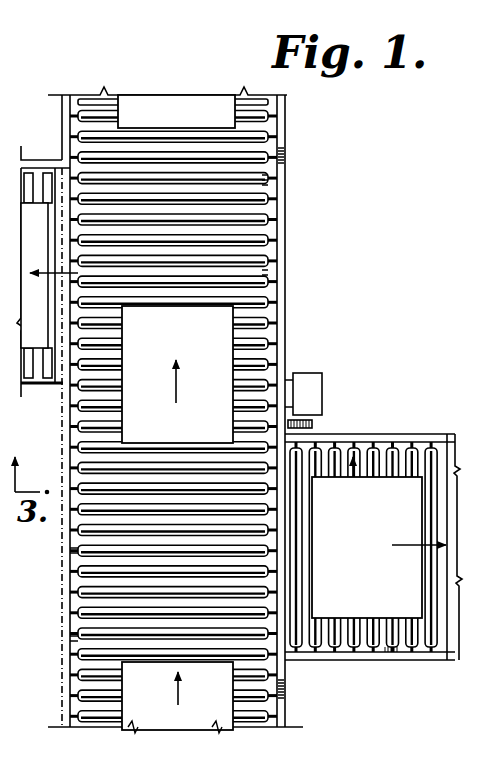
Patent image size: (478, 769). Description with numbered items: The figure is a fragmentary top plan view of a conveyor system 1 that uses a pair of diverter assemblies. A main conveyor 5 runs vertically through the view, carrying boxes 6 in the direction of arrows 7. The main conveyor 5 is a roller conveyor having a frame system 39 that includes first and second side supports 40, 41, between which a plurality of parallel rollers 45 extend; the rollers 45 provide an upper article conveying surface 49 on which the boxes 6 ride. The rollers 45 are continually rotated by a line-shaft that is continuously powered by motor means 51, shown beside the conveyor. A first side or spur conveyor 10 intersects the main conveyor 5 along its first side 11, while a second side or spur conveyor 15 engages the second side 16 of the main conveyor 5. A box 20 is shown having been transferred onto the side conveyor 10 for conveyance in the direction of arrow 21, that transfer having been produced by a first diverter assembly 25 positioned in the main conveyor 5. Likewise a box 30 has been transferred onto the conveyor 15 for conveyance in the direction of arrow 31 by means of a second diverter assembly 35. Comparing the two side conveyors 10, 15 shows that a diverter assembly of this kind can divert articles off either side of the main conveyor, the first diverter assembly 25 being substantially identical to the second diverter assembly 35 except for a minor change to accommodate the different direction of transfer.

The conveyor system 1 is at (303, 250).
The main conveyor 5 is at (287, 200).
The boxes 6 is at (158, 95).
The arrows 7 is at (176, 388).
The first side or spur conveyor 10 is at (395, 442).
The first side 11 is at (284, 303).
The second side or spur conveyor 15 is at (50, 160).
The second side 16 is at (62, 446).
The box 20 is at (338, 613).
The arrow 21 is at (412, 545).
The first diverter assembly 25 is at (76, 546).
The box 30 is at (26, 383).
The arrow 31 is at (45, 264).
The second diverter assembly 35 is at (266, 276).
The frame system 39 is at (286, 712).
The first side support 40 is at (286, 112).
The second side support 41 is at (62, 108).
The rollers 45 is at (262, 180).
The upper article conveying surface 49 is at (78, 640).
The motor means 51 is at (305, 382).